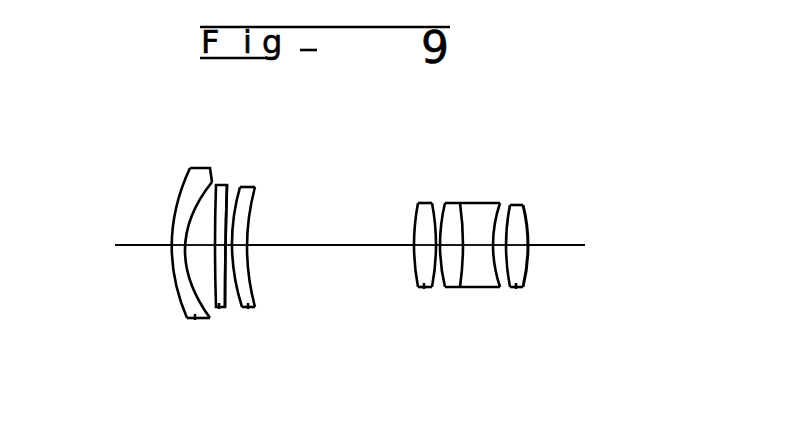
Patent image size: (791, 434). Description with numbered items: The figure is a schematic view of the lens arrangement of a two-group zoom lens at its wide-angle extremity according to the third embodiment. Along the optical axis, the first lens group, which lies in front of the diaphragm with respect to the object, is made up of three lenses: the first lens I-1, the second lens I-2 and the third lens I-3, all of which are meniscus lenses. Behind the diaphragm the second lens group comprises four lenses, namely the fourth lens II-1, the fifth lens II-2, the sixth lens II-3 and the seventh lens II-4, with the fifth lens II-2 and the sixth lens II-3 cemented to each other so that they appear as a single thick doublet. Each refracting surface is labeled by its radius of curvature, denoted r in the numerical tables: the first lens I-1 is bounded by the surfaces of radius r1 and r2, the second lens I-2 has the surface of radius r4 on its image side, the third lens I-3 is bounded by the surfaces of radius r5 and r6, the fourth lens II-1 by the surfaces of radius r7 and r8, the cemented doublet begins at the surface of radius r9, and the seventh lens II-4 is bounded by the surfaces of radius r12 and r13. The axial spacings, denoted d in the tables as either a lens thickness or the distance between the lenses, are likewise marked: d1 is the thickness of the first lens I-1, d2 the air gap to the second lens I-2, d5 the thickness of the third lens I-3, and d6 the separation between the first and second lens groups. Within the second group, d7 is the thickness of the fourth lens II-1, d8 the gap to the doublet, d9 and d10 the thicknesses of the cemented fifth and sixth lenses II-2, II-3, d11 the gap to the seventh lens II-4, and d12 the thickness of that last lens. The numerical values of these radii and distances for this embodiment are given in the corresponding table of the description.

The radius of curvature of the first lens surface r1 is at (180, 200).
The radius of curvature of the second lens surface r2 is at (212, 182).
The radius of curvature of the fourth lens surface r4 is at (234, 207).
The radius of curvature of the fifth lens surface r5 is at (240, 188).
The radius of curvature of the sixth lens surface r6 is at (255, 200).
The radius of curvature of the seventh lens surface r7 is at (415, 228).
The radius of curvature of the eighth lens surface r8 is at (432, 203).
The radius of curvature of the ninth lens surface r9 is at (441, 210).
The radius of curvature of the twelfth lens surface r12 is at (509, 228).
The radius of curvature of the thirteenth lens surface r13 is at (528, 232).
The lens thickness d1 is at (135, 208).
The distance between the lenses d2 is at (197, 247).
The lens thickness d5 is at (234, 258).
The distance between the lenses d6 is at (267, 247).
The lens thickness d7 is at (425, 262).
The distance between the lenses d8 is at (436, 243).
The lens thickness d9 is at (452, 262).
The lens thickness d10 is at (462, 272).
The distance between the lenses d11 is at (500, 262).
The lens thickness d12 is at (574, 215).
The first lens I-1 is at (151, 231).
The second lens I-2 is at (224, 259).
The third lens I-3 is at (280, 259).
The fourth lens II-1 is at (394, 222).
The fifth lens II-2 is at (439, 267).
The sixth lens II-3 is at (502, 315).
The seventh lens II-4 is at (572, 233).